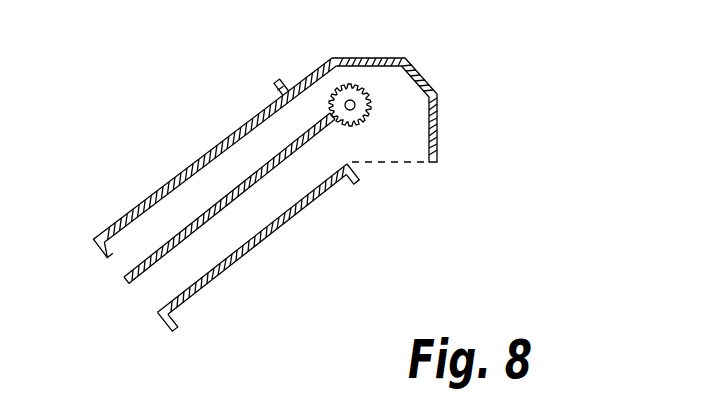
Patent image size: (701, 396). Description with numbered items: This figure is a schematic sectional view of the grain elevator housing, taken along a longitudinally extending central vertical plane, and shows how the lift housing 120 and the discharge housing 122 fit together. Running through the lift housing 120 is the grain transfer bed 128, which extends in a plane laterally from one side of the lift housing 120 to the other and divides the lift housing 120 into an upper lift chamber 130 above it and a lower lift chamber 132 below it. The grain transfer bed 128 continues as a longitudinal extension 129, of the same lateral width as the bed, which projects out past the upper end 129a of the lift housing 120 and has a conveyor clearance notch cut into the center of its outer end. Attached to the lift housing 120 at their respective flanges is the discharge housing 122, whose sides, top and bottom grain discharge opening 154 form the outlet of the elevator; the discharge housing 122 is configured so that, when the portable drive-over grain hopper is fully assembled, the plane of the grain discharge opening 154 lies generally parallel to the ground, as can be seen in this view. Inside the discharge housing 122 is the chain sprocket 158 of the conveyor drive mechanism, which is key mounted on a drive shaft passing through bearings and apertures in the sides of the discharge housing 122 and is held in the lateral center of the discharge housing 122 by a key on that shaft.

The lift housing 120 is at (228, 135).
The discharge housing 122 is at (416, 68).
The grain transfer bed 128 is at (200, 233).
The longitudinal extension 129 is at (328, 114).
The upper end 129a is at (357, 178).
The upper lift chamber 130 is at (185, 192).
The lower lift chamber 132 is at (223, 253).
The bottom grain discharge opening 154 is at (404, 164).
The chain sprocket 158 is at (360, 86).